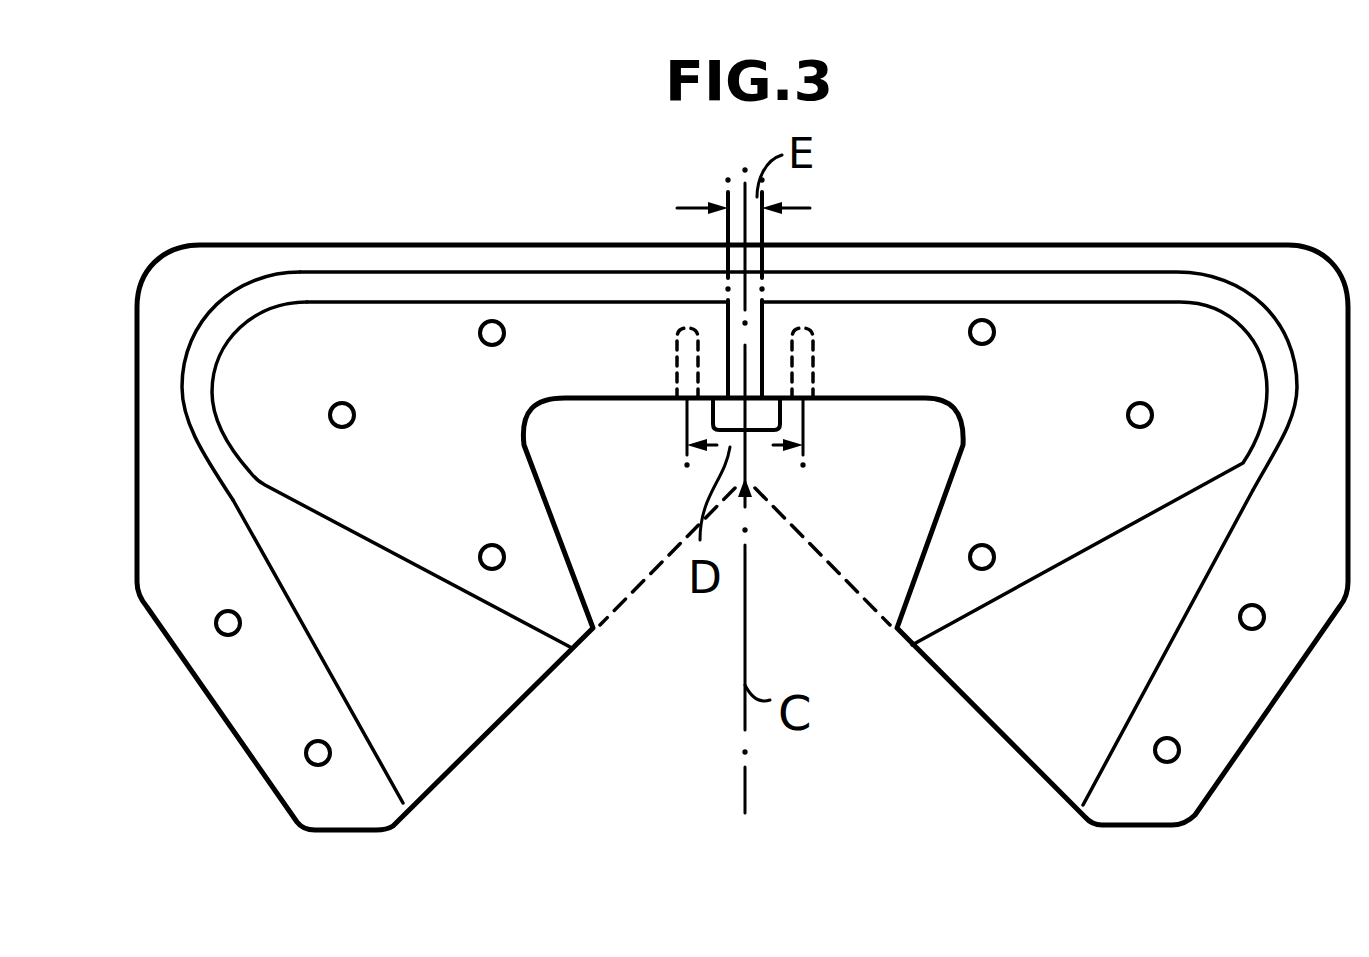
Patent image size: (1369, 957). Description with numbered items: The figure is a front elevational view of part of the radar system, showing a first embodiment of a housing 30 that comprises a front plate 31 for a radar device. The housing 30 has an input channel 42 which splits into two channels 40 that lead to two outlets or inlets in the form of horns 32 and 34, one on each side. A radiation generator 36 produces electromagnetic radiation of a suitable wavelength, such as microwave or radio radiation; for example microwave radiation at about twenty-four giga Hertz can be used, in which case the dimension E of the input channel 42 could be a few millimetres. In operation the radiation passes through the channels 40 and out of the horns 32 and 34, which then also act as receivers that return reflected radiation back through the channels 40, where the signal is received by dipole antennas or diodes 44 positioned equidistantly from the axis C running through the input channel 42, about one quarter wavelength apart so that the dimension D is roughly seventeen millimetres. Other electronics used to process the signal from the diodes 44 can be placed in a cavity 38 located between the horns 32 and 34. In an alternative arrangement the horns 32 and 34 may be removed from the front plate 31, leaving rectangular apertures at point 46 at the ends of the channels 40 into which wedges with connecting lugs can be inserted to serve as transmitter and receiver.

The housing 30 is at (648, 792).
The front plate 31 is at (1080, 477).
The horn 32 is at (448, 727).
The horn 34 is at (1020, 703).
The radiation generator 36 is at (757, 417).
The cavity 38 is at (640, 505).
The channels 40 is at (598, 288).
The input channel 42 is at (757, 368).
The diodes 44 is at (680, 368).
The point 46 is at (232, 520).